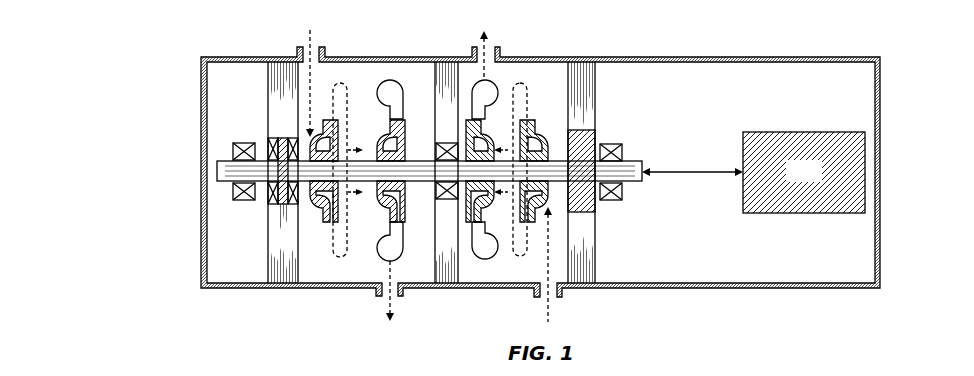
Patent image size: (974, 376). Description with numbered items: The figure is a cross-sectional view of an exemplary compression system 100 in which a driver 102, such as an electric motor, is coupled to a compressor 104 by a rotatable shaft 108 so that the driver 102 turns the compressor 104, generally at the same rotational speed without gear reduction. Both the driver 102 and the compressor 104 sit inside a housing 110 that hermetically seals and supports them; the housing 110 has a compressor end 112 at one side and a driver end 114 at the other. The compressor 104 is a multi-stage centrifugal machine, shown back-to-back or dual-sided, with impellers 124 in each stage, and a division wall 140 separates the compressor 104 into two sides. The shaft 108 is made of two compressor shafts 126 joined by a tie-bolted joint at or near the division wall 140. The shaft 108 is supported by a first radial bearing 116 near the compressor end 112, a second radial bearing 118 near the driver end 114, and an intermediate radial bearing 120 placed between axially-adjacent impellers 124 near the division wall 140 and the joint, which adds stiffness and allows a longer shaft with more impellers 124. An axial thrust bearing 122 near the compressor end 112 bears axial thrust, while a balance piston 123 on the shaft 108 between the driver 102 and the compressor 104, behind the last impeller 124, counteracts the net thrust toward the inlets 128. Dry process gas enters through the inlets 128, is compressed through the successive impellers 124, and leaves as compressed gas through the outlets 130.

The compression system 100 is at (181, 38).
The driver 102 is at (820, 181).
The compressor 104 is at (376, 77).
The rotatable shaft 108 is at (634, 184).
The housing 110 is at (681, 57).
The compressor end 112 is at (202, 172).
The driver end 114 is at (882, 174).
The first radial bearing 116 is at (242, 203).
The second radial bearing 118 is at (624, 149).
The intermediate radial bearing 120 is at (453, 128).
The axial thrust bearing 122 is at (272, 136).
The balance piston 123 is at (588, 130).
The impeller 124 is at (538, 213).
The compressor shaft 126 is at (353, 168).
The inlet 128 is at (313, 47).
The outlet 130 is at (489, 46).
The division wall 140 is at (459, 85).